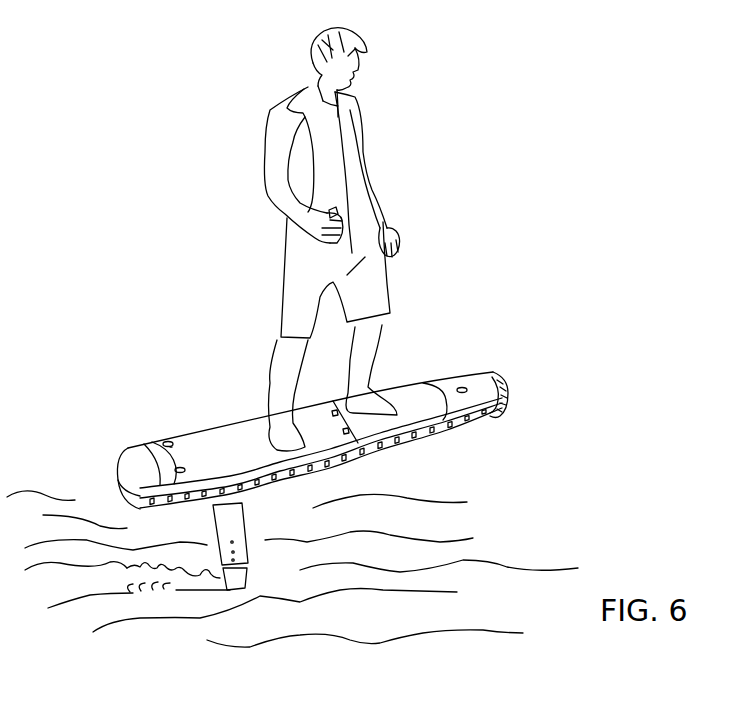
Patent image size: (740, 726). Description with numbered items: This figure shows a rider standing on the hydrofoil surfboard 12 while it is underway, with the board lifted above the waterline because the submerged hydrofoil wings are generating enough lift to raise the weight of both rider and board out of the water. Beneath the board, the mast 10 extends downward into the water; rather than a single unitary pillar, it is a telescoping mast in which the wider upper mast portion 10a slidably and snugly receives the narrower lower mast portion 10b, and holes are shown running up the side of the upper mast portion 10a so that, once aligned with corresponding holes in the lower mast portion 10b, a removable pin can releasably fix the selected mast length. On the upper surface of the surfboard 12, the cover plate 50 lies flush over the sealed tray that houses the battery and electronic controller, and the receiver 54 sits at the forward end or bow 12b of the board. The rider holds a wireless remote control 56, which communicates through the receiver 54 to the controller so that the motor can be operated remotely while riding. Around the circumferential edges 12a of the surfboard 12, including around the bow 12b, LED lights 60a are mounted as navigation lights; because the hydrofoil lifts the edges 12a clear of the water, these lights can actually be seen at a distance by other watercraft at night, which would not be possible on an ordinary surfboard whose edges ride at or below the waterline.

The mast 10 is at (260, 520).
The upper mast portion 10a is at (251, 551).
The lower mast portion 10b is at (257, 577).
The surfboard 12 is at (196, 408).
The circumferential edges 12a is at (125, 485).
The bow 12b is at (499, 374).
The cover plate 50 is at (229, 460).
The receiver 54 is at (457, 387).
The wireless remote control 56 is at (336, 209).
The LED lights 60a is at (413, 445).